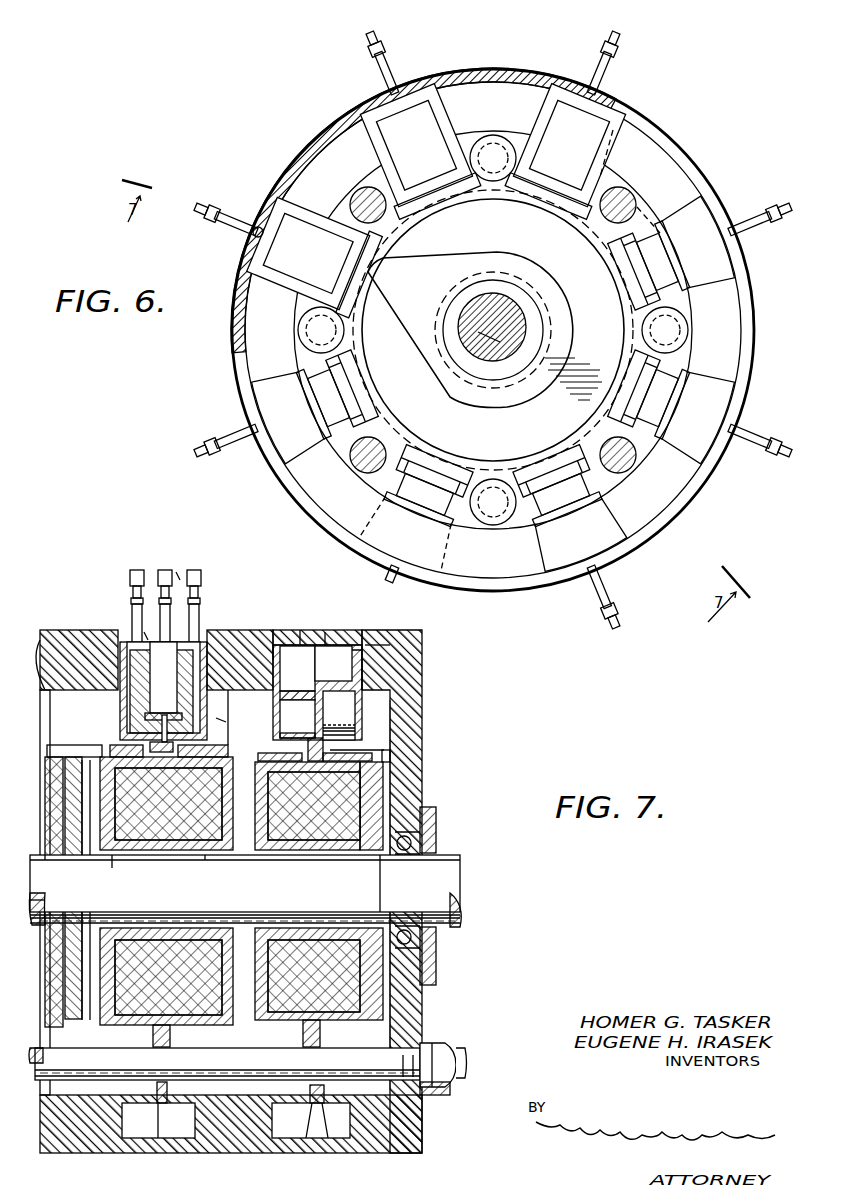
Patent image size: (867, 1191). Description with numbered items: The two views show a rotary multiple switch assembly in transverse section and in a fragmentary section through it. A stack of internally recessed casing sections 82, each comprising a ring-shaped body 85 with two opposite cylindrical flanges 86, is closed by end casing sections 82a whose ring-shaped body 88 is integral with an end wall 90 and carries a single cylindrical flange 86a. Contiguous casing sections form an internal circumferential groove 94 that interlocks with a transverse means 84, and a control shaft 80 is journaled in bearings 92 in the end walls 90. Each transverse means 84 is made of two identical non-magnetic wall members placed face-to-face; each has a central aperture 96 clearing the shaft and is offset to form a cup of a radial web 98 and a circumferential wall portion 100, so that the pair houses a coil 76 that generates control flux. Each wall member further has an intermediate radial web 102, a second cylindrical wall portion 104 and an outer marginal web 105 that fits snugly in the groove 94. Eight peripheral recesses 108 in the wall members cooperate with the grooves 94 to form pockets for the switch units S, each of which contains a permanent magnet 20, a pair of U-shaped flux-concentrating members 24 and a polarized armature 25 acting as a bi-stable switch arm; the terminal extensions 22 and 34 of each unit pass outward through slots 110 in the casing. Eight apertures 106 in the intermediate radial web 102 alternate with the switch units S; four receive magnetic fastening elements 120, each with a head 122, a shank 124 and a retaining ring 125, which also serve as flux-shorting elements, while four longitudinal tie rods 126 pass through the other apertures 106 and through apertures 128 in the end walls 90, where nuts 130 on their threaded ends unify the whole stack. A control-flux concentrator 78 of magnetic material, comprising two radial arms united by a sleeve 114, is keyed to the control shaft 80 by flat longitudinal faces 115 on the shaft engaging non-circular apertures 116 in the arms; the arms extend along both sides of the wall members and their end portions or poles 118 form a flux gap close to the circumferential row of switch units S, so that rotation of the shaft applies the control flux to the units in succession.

In FIG. 7, the permanent magnet 20 is at (163, 681).
In FIG. 7, the terminal extension 22 is at (180, 586).
In FIG. 7, the U-shaped flux-concentrating members 24 is at (120, 703).
In FIG. 7, the armature 25 is at (150, 728).
In FIG. 6, the terminal extensions 34 is at (388, 68).
In FIG. 7, the terminal extensions 34 is at (128, 612).
In FIG. 7, the coil 76 is at (138, 1003).
In FIG. 6, the control-flux concentrator 78 is at (416, 371).
In FIG. 7, the control-flux concentrator 78 is at (100, 757).
In FIG. 6, the control shaft 80 is at (530, 342).
In FIG. 7, the control shaft 80 is at (455, 890).
In FIG. 6, the casing sections 82 is at (279, 163).
In FIG. 7, the casing sections 82 is at (62, 630).
In FIG. 7, the end casing sections 82a is at (386, 630).
In FIG. 7, the transverse means 84 is at (375, 691).
In FIG. 6, the ring-shaped body 85 is at (358, 135).
In FIG. 7, the ring-shaped body 85 is at (55, 650).
In FIG. 6, the cylindrical flanges 86 is at (310, 143).
In FIG. 7, the cylindrical flanges 86 is at (304, 640).
In FIG. 7, the cylindrical flange 86a is at (335, 645).
In FIG. 7, the ring-shaped body 88 is at (362, 670).
In FIG. 7, the end wall 90 is at (416, 778).
In FIG. 7, the bearings 92 is at (410, 844).
In FIG. 7, the internal circumferential groove 94 is at (126, 1162).
In FIG. 7, the central circular aperture 96 is at (166, 821).
In FIG. 7, the radial web 98 is at (367, 795).
In FIG. 7, the circumferential wall portion 100 is at (262, 754).
In FIG. 7, the intermediate radial web 102 is at (355, 734).
In FIG. 7, the second cylindrical wall portion 104 is at (268, 690).
In FIG. 7, the outer marginal web 105 is at (272, 665).
In FIG. 6, the apertures 106 is at (500, 150).
In FIG. 7, the apertures 106 is at (312, 705).
In FIG. 6, the peripheral recesses 108 is at (393, 485).
In FIG. 6, the slots 110 is at (253, 234).
In FIG. 7, the slots 110 is at (146, 632).
In FIG. 7, the sleeve 114 is at (291, 850).
In FIG. 6, the flat longitudinal faces 115 is at (505, 322).
In FIG. 7, the flat longitudinal faces 115 is at (45, 897).
In FIG. 6, the non-circular apertures 116 is at (543, 330).
In FIG. 7, the non-circular apertures 116 is at (332, 870).
In FIG. 7, the poles 118 is at (386, 748).
In FIG. 6, the fastening elements 120 is at (493, 123).
In FIG. 7, the fastening elements 120 is at (363, 714).
In FIG. 7, the head 122 is at (355, 725).
In FIG. 7, the shank 124 is at (297, 668).
In FIG. 7, the retaining ring 125 is at (293, 697).
In FIG. 6, the tie rods 126 is at (622, 202).
In FIG. 7, the tie rods 126 is at (224, 1064).
In FIG. 7, the apertures 128 is at (445, 1043).
In FIG. 7, the nuts 130 is at (448, 1048).
In FIG. 6, the switch units S is at (450, 214).
In FIG. 7, the switch units S is at (219, 725).